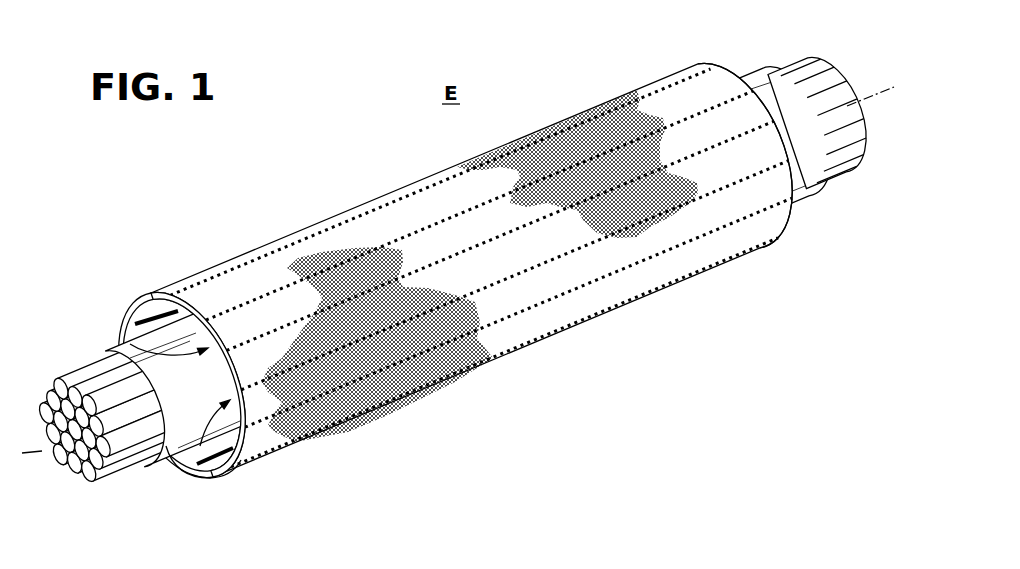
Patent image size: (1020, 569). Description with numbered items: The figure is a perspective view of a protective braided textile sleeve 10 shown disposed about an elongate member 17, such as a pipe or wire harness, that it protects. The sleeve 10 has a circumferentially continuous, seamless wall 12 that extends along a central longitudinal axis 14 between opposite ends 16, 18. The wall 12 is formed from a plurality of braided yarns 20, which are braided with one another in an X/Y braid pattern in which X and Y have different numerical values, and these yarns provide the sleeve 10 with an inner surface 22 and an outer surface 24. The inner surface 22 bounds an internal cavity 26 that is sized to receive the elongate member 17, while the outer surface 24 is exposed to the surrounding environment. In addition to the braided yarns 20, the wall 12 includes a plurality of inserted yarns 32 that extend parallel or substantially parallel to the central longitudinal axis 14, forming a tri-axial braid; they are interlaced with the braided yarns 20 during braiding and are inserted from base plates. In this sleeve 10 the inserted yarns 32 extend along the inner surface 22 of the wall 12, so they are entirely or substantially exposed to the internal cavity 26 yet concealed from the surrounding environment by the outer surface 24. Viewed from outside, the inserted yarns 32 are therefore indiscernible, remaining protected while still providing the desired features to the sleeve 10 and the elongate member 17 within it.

The protective braided textile sleeve 10 is at (232, 229).
The seamless wall 12 is at (423, 200).
The central longitudinal axis 14 is at (37, 456).
The end 16 is at (192, 471).
The elongate member 17 is at (774, 100).
The end 18 is at (790, 222).
The braided yarns 20 is at (519, 349).
The inner surface 22 is at (233, 474).
The outer surface 24 is at (645, 264).
The internal cavity 26 is at (128, 343).
The inserted yarns 32 is at (138, 320).